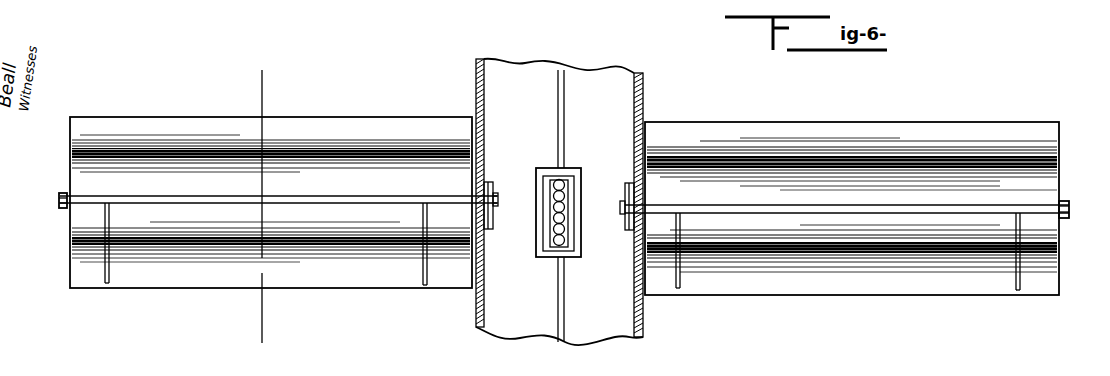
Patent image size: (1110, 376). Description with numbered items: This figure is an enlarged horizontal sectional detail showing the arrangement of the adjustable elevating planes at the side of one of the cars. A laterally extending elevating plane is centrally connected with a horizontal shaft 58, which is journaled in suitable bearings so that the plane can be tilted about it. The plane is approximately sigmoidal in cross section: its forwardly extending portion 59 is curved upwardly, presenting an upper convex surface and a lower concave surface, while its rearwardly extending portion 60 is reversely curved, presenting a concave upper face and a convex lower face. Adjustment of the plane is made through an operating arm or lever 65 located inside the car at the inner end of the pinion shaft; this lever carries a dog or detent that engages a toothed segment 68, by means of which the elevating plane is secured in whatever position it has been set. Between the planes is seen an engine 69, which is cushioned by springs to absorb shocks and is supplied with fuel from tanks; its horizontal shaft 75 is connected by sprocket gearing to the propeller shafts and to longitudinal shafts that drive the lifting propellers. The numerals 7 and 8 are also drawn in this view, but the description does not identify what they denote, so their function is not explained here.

The post 7 is at (546, 210).
The section line 8 is at (262, 73).
The horizontal shaft 58 is at (103, 202).
The forwardly extending portion 59 is at (95, 127).
The rearwardly extending portion 60 is at (173, 268).
The operating arm or lever 65 is at (495, 203).
The toothed segment 68 is at (491, 184).
The engine 69 is at (567, 176).
The horizontal shaft 75 is at (565, 305).